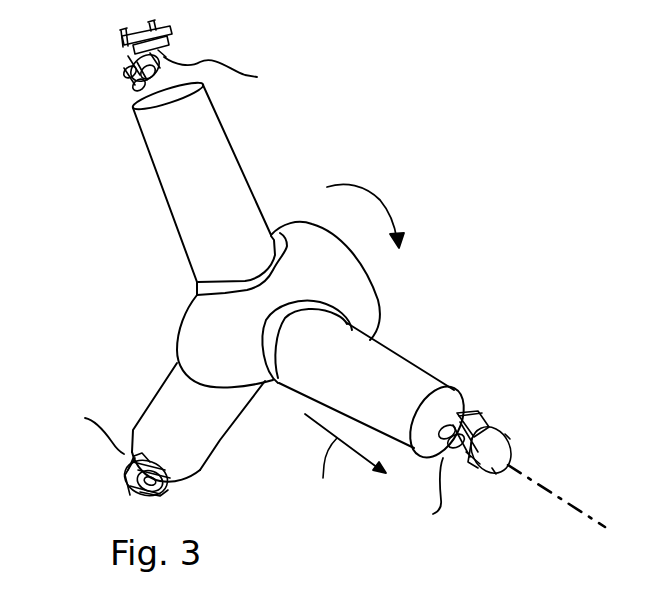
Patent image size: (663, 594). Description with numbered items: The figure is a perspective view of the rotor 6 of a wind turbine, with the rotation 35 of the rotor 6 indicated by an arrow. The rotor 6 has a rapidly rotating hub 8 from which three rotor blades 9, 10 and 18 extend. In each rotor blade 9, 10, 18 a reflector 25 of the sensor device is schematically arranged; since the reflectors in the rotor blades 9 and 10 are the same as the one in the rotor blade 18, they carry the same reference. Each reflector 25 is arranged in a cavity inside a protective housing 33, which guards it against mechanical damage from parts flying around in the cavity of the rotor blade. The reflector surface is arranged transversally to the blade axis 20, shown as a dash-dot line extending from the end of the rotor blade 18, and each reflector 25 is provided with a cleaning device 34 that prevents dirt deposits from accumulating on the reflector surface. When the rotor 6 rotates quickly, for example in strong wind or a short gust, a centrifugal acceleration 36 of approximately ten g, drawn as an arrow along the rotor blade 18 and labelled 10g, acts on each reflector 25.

The rotor 6 is at (480, 228).
The hub 8 is at (227, 353).
The rotor blade 9 is at (212, 193).
The rotor blade 10 is at (195, 436).
The rotor blade 18 is at (353, 379).
The reflector 25 is at (187, 39).
The protective housing 33 is at (491, 423).
The cleaning device 34 is at (235, 312).
The rotation 35 is at (372, 188).
The centrifugal acceleration 36 is at (318, 430).
The gravity direction 10g is at (326, 478).
The blade axis 20 is at (558, 496).